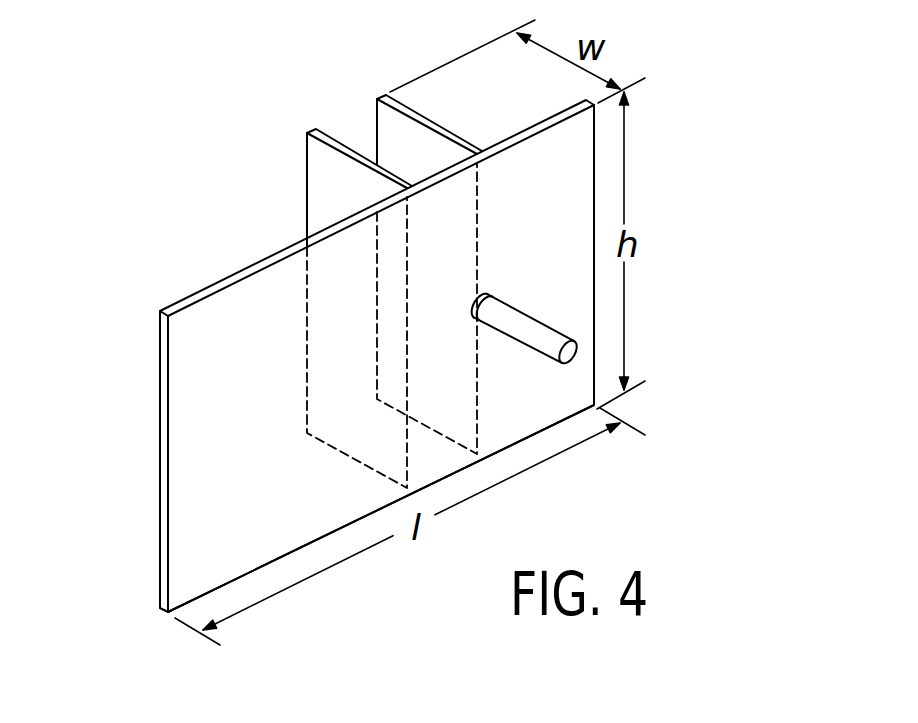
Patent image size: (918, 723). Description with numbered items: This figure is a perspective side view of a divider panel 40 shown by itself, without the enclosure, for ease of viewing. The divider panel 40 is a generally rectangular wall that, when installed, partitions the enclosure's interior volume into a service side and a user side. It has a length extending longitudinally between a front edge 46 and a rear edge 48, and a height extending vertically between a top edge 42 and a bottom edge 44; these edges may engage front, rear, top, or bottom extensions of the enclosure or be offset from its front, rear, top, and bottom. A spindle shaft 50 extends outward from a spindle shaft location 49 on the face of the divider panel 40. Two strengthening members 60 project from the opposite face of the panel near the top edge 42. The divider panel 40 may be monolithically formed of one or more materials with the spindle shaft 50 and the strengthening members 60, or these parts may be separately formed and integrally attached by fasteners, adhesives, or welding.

The divider panel 40 is at (107, 230).
The top edge 42 is at (223, 279).
The bottom edge 44 is at (273, 565).
The front edge 46 is at (160, 447).
The rear edge 48 is at (595, 359).
The spindle shaft location 49 is at (513, 277).
The spindle shaft 50 is at (525, 335).
The strengthening member 60 is at (308, 148).